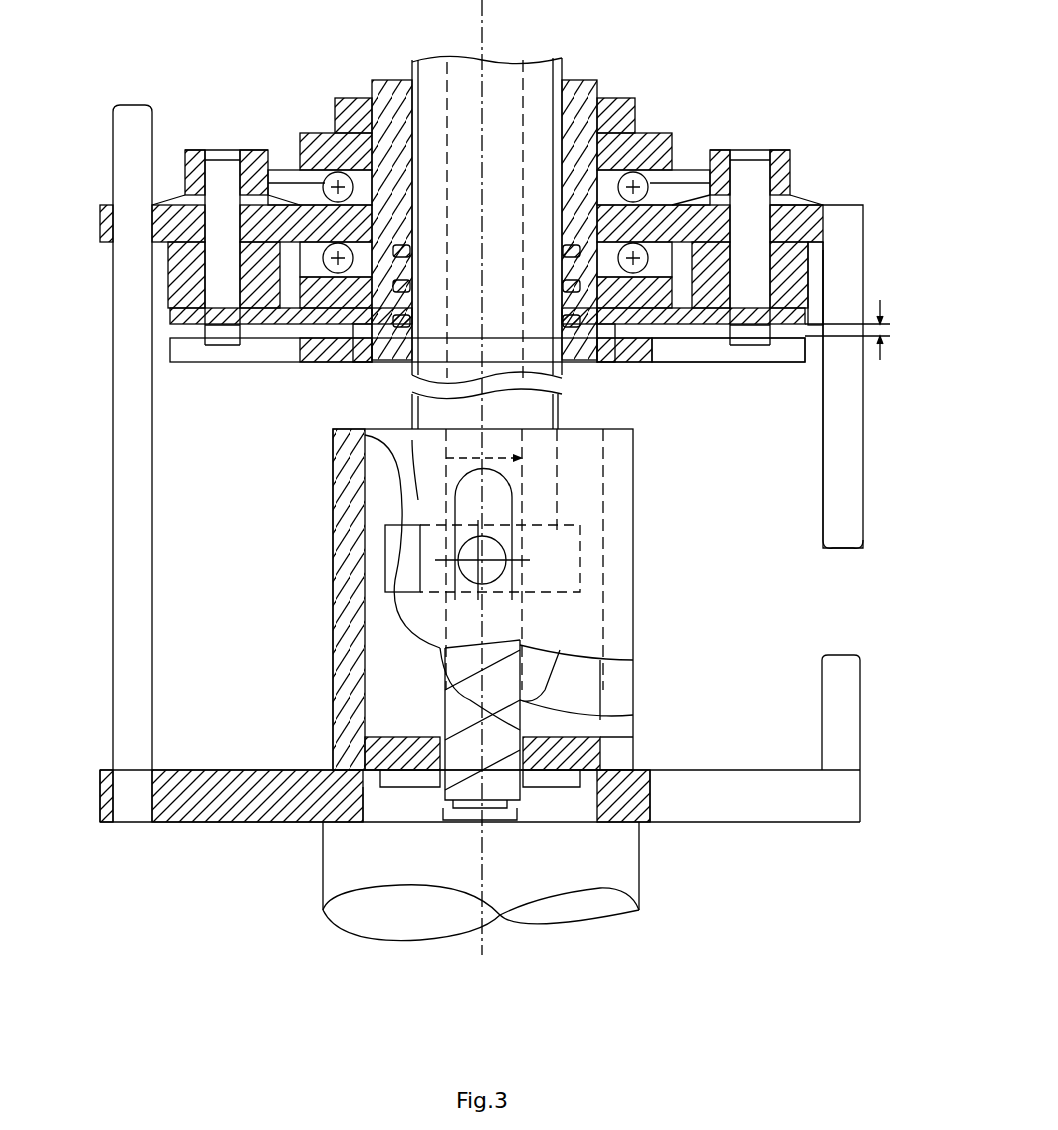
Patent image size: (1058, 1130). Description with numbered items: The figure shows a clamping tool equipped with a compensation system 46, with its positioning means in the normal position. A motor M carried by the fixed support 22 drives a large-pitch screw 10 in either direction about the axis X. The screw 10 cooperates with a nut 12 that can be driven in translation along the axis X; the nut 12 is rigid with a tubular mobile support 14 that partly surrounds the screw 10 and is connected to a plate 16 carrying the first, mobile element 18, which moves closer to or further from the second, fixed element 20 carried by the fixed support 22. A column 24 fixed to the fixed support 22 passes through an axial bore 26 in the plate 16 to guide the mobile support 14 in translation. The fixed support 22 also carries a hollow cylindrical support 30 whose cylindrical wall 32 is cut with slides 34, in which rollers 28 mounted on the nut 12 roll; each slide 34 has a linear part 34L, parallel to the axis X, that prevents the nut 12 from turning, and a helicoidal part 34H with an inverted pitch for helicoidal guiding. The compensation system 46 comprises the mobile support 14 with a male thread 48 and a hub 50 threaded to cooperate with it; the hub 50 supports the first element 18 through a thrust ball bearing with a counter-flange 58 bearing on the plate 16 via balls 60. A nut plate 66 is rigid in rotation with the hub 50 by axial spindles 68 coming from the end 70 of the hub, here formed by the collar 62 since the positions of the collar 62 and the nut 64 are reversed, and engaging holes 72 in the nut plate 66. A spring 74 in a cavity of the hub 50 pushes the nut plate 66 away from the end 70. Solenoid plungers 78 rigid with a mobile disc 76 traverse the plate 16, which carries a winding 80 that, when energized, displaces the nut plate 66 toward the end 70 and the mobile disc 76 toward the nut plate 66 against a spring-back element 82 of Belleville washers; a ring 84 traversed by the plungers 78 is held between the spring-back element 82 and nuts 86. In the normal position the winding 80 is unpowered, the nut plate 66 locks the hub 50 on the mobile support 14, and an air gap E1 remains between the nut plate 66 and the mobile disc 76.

The screw 10 is at (438, 692).
The nut 12 is at (385, 548).
The mobile support 14 is at (535, 58).
The plate 16 is at (845, 205).
The first element 18 is at (840, 548).
The second element 20 is at (835, 655).
The fixed support 22 is at (758, 822).
The column 24 is at (155, 442).
The axial bore 26 is at (104, 222).
The rollers 28 is at (500, 575).
The hollow cylindrical support 30 is at (330, 738).
The cylindrical wall 32 is at (343, 640).
The slides 34 is at (518, 680).
The helicoidal part 34H is at (525, 655).
The linear part 34L is at (505, 490).
The compensation system 46 is at (645, 115).
The male thread 48 is at (385, 80).
The hub 50 is at (580, 80).
The counter-flange 58 is at (300, 312).
The balls 60 is at (300, 205).
The collar 62 is at (318, 325).
The nut 64 is at (318, 112).
The nut plate 66 is at (803, 362).
The axial spindles 68 is at (362, 325).
The end of the hub 70 is at (660, 324).
The holes 72 is at (368, 362).
The spring 74 is at (412, 290).
The mobile disc 76 is at (715, 362).
The solenoid plungers 78 is at (215, 290).
The winding 80 is at (823, 290).
The spring-back element 82 is at (805, 205).
The ring 84 is at (680, 180).
The nuts 86 is at (775, 150).
The air gap E1 is at (860, 330).
The motor M is at (645, 895).
The axis X is at (479, 495).